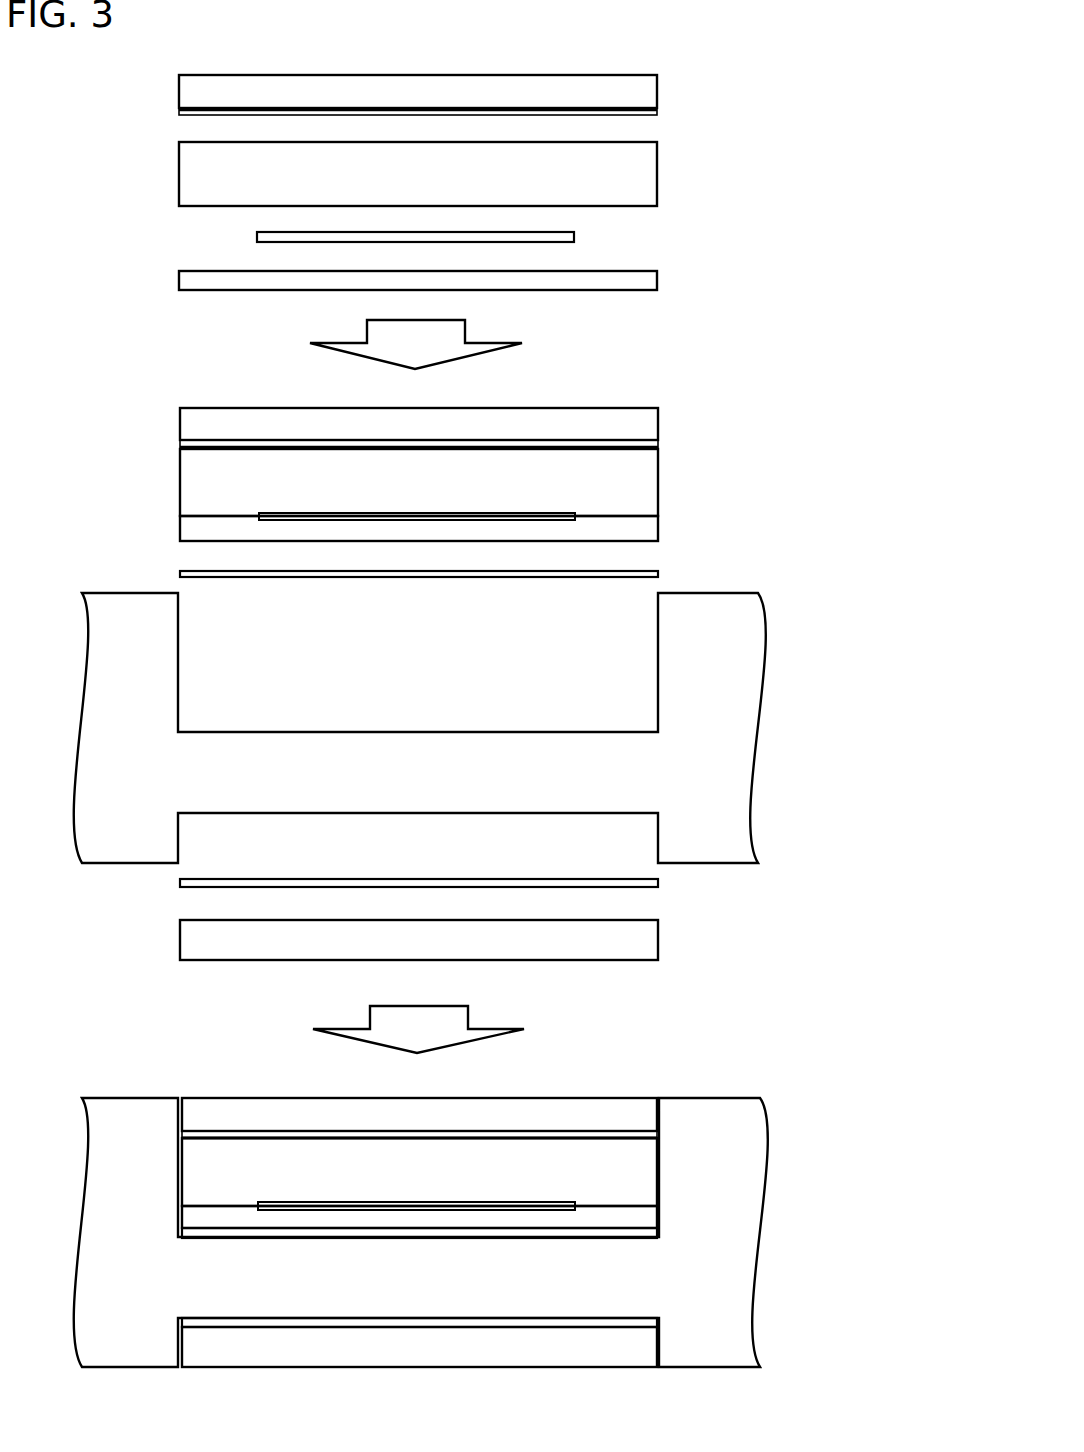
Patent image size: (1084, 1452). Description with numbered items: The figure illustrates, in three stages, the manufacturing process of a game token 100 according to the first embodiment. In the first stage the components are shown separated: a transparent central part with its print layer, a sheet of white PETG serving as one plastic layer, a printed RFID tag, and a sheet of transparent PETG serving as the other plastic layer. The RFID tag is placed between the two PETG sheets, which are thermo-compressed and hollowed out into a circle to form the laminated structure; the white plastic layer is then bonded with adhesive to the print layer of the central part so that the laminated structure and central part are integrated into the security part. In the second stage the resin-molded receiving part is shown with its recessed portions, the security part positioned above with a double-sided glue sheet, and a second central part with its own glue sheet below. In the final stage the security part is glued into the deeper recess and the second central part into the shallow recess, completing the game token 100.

The display device 100 is at (474, 1193).